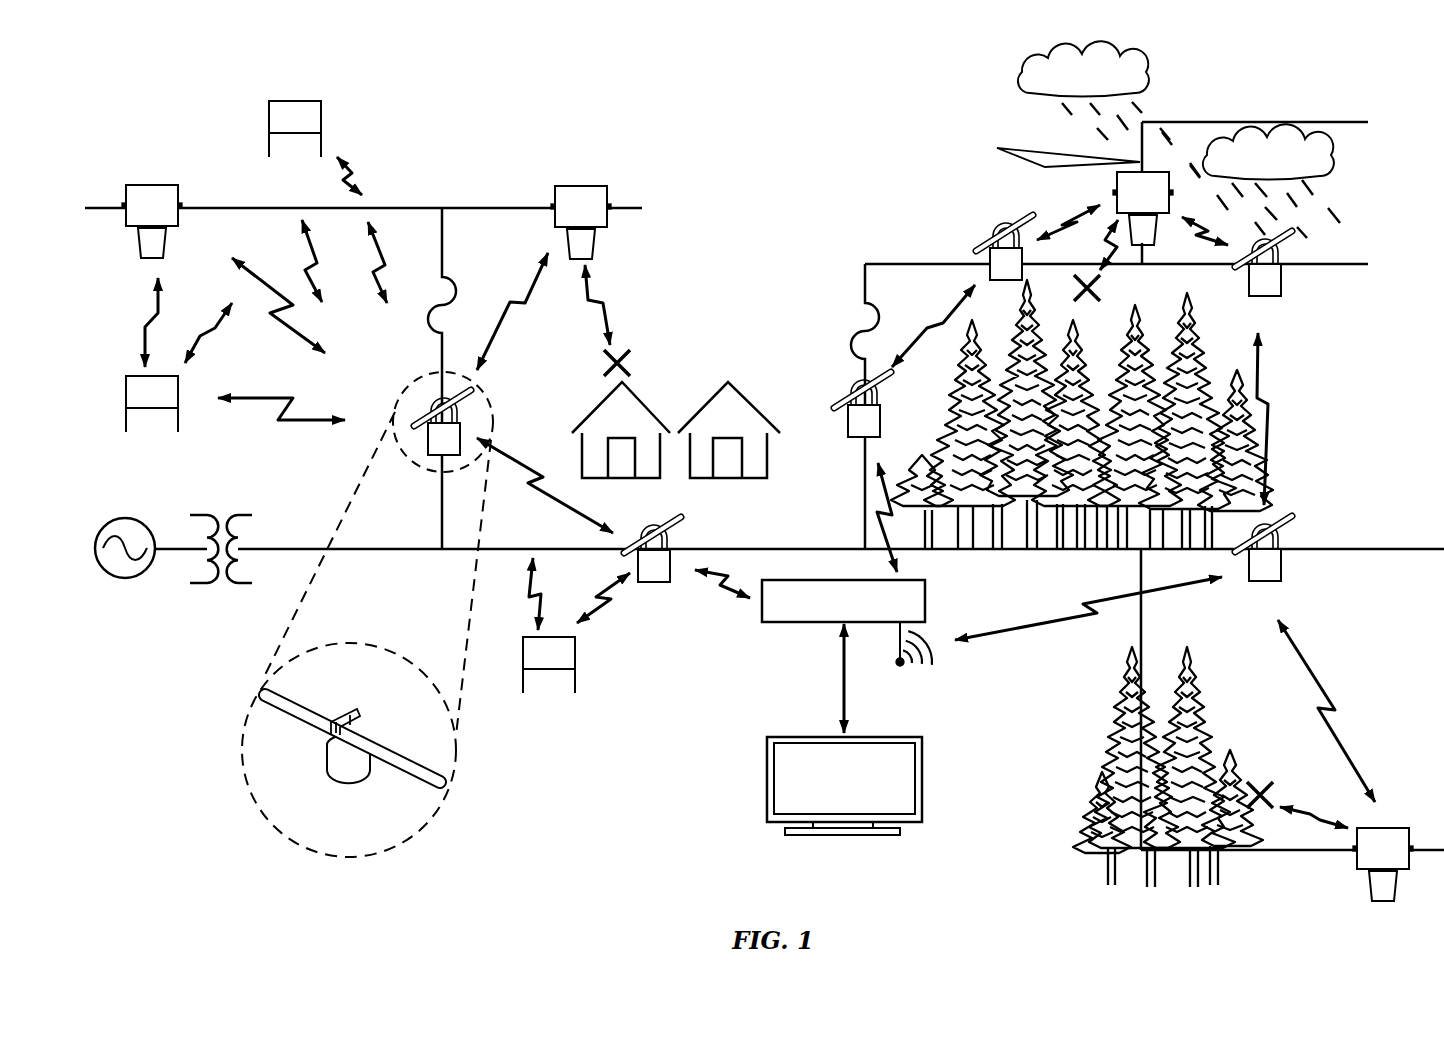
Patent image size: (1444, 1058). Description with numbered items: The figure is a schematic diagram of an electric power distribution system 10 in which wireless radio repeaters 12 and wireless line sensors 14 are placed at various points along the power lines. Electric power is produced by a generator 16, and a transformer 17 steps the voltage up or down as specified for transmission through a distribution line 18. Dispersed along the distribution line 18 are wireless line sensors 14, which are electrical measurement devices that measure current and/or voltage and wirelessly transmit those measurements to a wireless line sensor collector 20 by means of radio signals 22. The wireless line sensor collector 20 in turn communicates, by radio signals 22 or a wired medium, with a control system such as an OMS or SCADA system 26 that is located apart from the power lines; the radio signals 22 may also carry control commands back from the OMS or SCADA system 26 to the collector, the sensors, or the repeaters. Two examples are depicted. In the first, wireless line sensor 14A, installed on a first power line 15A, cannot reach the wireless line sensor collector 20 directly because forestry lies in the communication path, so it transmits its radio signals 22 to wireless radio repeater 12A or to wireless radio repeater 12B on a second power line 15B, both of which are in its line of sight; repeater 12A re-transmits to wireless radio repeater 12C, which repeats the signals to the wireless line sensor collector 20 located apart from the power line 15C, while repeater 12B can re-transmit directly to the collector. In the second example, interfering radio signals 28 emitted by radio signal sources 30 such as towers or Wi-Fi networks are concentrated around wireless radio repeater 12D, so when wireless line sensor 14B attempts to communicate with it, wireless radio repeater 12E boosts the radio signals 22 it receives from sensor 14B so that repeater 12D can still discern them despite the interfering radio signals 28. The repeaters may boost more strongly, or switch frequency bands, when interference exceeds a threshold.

The electric power distribution system 10 is at (458, 100).
The wireless radio repeater 12 is at (432, 395).
The wireless radio repeater 12A is at (1005, 225).
The wireless radio repeater 12B is at (1280, 280).
The wireless radio repeater 12C is at (848, 420).
The wireless radio repeater 12D is at (655, 583).
The wireless radio repeater 12E is at (1281, 572).
The wireless line sensor 14 is at (582, 186).
The wireless line sensor 14A is at (1117, 190).
The wireless line sensor 14B is at (153, 185).
The first power line 15A is at (1045, 167).
The second power line 15B is at (1350, 264).
The power line 15C is at (1378, 549).
The generator 16 is at (118, 521).
The transformer 17 is at (218, 510).
The distribution line 18 is at (316, 548).
The wireless line sensor collector 20 is at (925, 600).
The radio signals 22 is at (292, 310).
The OMS or SCADA system 26 is at (767, 775).
The interfering radio signals 28 is at (353, 173).
The radio signal source 30 is at (298, 101).